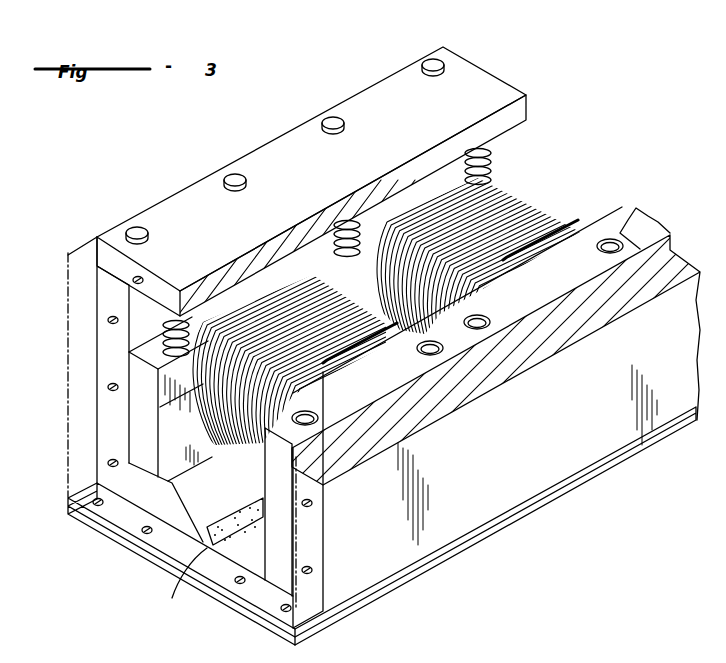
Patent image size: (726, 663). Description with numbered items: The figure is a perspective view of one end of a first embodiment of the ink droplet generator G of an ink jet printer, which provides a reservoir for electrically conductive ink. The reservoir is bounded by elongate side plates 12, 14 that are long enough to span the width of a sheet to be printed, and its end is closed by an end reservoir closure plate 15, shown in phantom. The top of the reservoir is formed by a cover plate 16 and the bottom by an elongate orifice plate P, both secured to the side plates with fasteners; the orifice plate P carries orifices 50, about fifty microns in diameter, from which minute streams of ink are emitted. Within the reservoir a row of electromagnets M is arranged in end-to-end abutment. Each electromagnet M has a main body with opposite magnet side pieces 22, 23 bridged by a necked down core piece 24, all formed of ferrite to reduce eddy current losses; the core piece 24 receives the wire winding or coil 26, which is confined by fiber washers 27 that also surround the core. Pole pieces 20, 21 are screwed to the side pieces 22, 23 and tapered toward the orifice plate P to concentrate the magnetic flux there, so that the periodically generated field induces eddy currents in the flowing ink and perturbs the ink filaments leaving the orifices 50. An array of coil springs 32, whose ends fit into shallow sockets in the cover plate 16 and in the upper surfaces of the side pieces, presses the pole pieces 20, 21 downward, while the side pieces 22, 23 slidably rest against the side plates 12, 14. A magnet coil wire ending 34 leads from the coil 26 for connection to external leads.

The ink droplet generator G is at (178, 168).
The electromagnets M is at (248, 288).
The orifice plate P is at (200, 591).
The side plate 12 is at (100, 388).
The side plate 14 is at (527, 478).
The end reservoir closure plate 15 is at (68, 253).
The cover plate 16 is at (305, 167).
The pole piece 20 is at (140, 500).
The pole piece 21 is at (268, 572).
The magnet side piece 22 is at (137, 427).
The magnet side piece 23 is at (270, 479).
The core piece 24 is at (213, 420).
The coil 26 is at (278, 305).
The washers 27 is at (226, 290).
The coil springs 32 is at (168, 320).
The magnet coil wire ending 34 is at (360, 352).
The orifices 50 is at (246, 523).